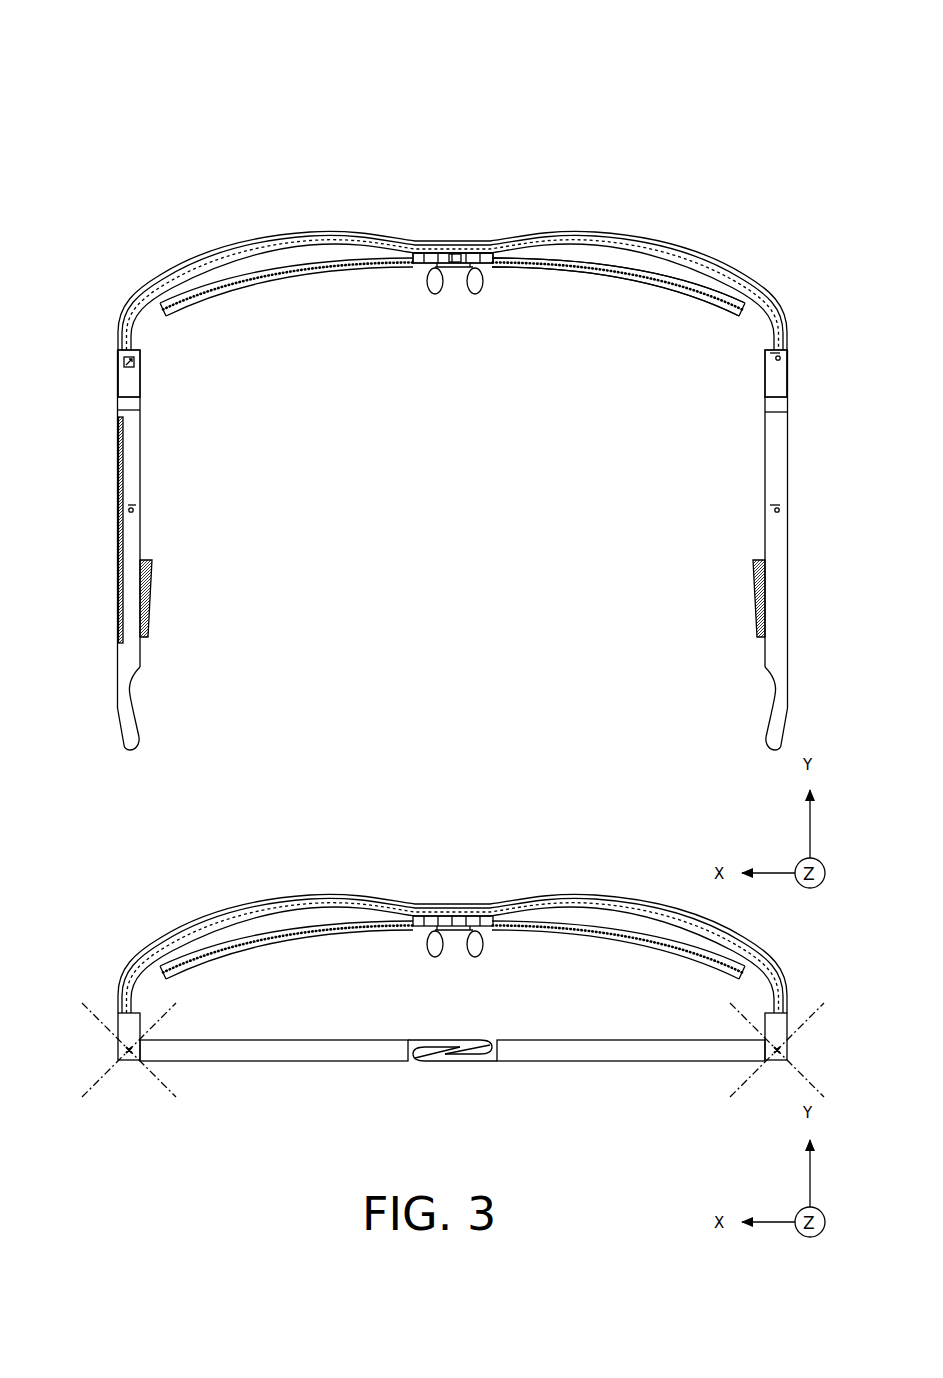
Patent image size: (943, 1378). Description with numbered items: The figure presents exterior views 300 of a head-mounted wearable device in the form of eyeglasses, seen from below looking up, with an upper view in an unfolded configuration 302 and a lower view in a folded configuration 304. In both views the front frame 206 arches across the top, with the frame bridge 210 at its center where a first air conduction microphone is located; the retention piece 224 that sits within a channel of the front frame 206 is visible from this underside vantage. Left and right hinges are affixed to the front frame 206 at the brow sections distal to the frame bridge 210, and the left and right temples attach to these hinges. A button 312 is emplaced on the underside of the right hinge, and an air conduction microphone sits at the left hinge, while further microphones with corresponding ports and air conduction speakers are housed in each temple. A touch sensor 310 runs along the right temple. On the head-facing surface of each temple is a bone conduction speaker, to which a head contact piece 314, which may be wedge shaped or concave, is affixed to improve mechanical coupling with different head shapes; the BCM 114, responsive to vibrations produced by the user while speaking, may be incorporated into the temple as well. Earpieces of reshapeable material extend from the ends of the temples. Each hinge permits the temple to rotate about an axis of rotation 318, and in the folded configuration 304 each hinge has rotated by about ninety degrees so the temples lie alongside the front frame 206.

The exterior views 300 is at (677, 52).
The unfolded configuration 302 is at (268, 86).
The folded configuration 304 is at (253, 875).
The front frame 206 is at (274, 233).
The frame bridge 210 is at (510, 167).
The retention piece 224 is at (593, 243).
The button 312 is at (137, 362).
The head contact piece 314 is at (143, 622).
The touch sensor 310 is at (117, 480).
The BCM 114 is at (767, 658).
The axis of rotation 318 is at (747, 1080).